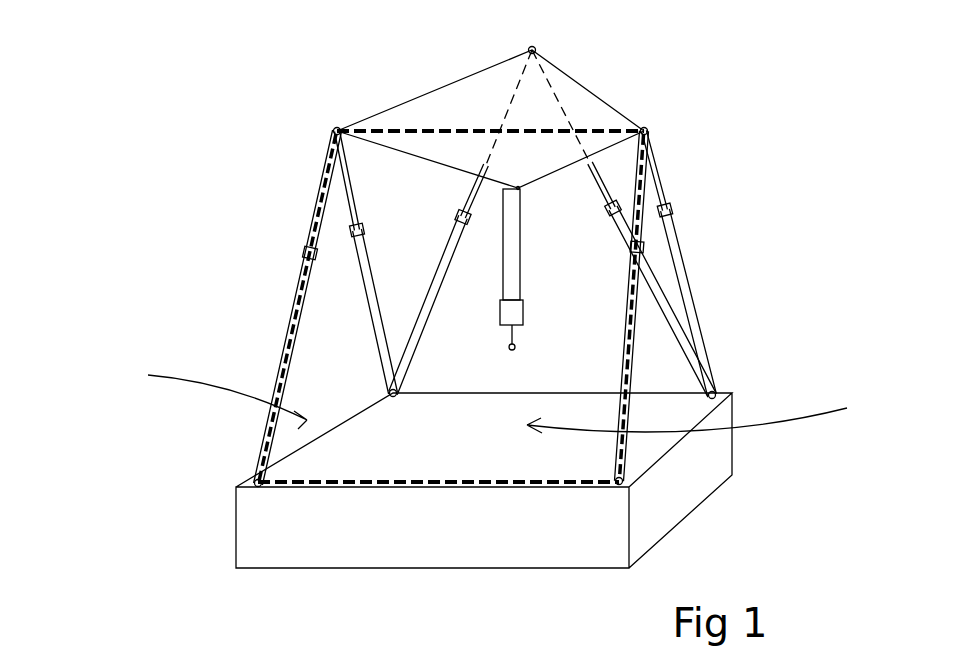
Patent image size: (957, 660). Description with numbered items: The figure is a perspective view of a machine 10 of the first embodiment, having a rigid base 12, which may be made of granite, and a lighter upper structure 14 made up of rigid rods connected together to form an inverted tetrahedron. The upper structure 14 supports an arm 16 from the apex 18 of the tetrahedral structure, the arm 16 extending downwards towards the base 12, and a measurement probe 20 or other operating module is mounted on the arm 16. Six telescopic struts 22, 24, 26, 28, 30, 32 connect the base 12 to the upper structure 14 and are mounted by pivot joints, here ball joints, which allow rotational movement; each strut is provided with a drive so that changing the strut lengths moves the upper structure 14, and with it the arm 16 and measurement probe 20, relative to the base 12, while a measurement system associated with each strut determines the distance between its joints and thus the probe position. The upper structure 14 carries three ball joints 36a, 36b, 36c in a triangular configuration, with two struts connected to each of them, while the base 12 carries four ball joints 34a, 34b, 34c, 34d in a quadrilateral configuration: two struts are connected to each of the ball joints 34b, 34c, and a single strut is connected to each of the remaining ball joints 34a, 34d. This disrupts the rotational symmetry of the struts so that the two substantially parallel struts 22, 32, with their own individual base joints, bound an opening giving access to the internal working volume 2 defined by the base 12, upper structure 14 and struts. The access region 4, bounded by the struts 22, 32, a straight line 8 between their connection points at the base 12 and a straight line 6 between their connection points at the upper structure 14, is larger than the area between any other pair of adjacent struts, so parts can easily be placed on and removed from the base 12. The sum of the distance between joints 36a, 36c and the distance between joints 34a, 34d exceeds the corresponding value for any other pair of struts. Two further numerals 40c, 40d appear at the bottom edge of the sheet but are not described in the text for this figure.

The working volume 2 is at (695, 414).
The access region 4 is at (217, 395).
The straight line between upper connection points 6 is at (433, 130).
The straight line between base connection points 8 is at (395, 485).
The machine 10 is at (130, 195).
The base 12 is at (250, 543).
The upper structure 14 is at (597, 100).
The arm 16 is at (520, 283).
The apex 18 is at (522, 189).
The measurement probe 20 is at (510, 318).
The strut 22 is at (276, 371).
The strut 24 is at (368, 315).
The strut 26 is at (437, 290).
The strut 28 is at (625, 236).
The strut 30 is at (689, 258).
The strut 32 is at (622, 360).
The ball joint 34a is at (254, 483).
The ball joint 34b is at (389, 396).
The ball joint 34c is at (734, 394).
The ball joint 34d is at (625, 481).
The ball joint 36a is at (335, 127).
The ball joint 36b is at (536, 47).
The ball joint 36c is at (648, 131).
The actuator 40c is at (481, 659).
The actuator 40d is at (505, 659).